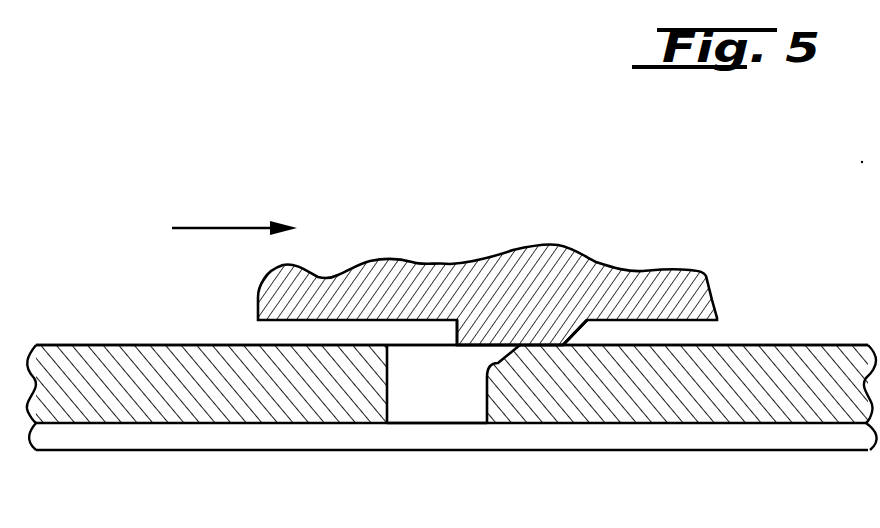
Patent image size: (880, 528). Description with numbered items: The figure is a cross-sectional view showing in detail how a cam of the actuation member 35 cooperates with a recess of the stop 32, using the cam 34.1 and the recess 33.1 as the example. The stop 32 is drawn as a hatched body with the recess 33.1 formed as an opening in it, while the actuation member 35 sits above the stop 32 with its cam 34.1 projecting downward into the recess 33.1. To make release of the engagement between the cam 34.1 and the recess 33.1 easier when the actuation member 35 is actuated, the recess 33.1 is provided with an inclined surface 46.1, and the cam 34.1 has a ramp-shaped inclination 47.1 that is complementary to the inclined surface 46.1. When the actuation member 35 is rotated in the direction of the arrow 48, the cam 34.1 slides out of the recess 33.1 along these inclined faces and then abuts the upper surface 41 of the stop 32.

The stop 32 is at (94, 322).
The upper surface 41 is at (796, 332).
The recess 33.1 is at (417, 405).
The inclined surface 46.1 is at (490, 363).
The actuation member 35 is at (672, 254).
The cam 34.1 is at (524, 332).
The ramp-shaped inclination 47.1 is at (578, 330).
The arrow 48 is at (236, 228).